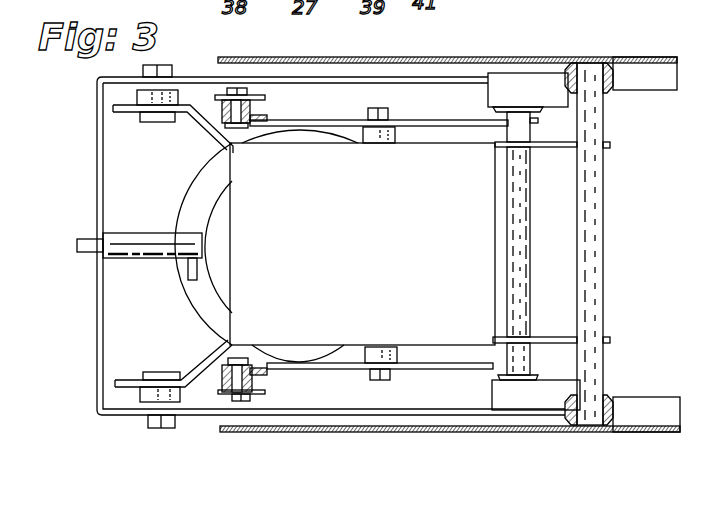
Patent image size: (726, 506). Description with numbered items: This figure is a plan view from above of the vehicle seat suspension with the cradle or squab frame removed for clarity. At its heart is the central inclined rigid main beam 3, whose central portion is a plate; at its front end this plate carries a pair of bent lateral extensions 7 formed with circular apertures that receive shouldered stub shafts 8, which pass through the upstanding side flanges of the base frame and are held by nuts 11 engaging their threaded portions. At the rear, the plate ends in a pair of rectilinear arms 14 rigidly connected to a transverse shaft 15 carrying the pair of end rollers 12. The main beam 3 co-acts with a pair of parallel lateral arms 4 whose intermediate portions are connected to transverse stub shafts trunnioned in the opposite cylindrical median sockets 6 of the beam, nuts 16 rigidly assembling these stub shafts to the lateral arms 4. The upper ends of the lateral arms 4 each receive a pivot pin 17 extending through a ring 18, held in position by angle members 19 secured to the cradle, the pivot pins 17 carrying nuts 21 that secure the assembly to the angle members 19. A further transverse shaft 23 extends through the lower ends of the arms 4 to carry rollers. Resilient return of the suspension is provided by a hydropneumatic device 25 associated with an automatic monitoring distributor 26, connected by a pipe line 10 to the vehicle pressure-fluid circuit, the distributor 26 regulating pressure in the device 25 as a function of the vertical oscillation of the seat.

The main beam 3 is at (297, 263).
The lateral arm 4 is at (438, 120).
The cylindrical median socket 6 is at (381, 130).
The bent lateral extension 7 is at (207, 127).
The shouldered stub shaft 8 is at (145, 96).
The pipe line 10 is at (94, 239).
The nut 11 is at (165, 70).
The end roller 12 is at (609, 90).
The rectilinear arm 14 is at (533, 150).
The transverse shaft 15 is at (594, 219).
The nut 16 is at (386, 108).
The pivot pin 17 is at (256, 378).
The ring 18 is at (252, 392).
The angle member 19 is at (247, 402).
The nut 21 is at (190, 415).
The transverse shaft 23 is at (539, 361).
The hydropneumatic device 25 is at (167, 204).
The automatic monitoring distributor 26 is at (126, 259).